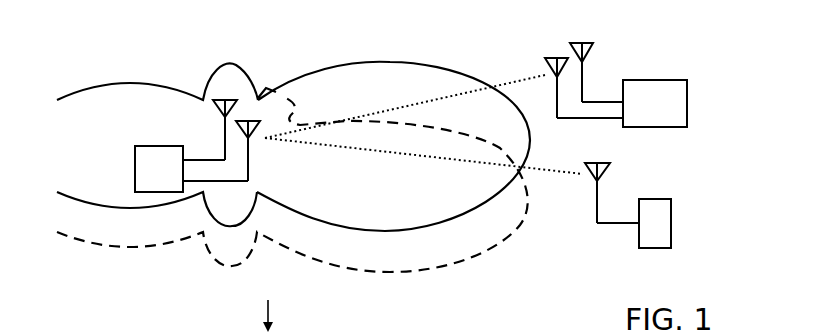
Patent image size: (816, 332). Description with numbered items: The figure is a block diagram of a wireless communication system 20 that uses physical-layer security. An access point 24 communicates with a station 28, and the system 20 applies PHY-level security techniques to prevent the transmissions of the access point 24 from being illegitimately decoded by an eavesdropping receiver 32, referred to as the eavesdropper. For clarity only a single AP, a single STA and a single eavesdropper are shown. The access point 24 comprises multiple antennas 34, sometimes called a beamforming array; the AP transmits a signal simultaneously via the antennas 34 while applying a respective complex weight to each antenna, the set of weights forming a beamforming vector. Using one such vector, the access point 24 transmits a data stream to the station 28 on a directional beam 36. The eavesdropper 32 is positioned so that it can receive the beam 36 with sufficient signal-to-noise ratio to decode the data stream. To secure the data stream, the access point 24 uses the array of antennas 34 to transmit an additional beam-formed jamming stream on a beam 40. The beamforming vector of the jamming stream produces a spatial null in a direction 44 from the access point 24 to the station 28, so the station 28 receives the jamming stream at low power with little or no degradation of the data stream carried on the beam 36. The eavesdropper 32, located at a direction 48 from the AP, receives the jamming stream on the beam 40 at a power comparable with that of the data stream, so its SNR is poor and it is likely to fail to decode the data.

The system 20 is at (106, 58).
The access point 24 is at (134, 168).
The station 28 is at (688, 100).
The eavesdropping receiver 32 is at (672, 222).
The antennas 34 is at (241, 138).
The beam 36 is at (470, 70).
The beam 40 is at (495, 247).
The direction 44 is at (525, 68).
The direction 48 is at (561, 176).